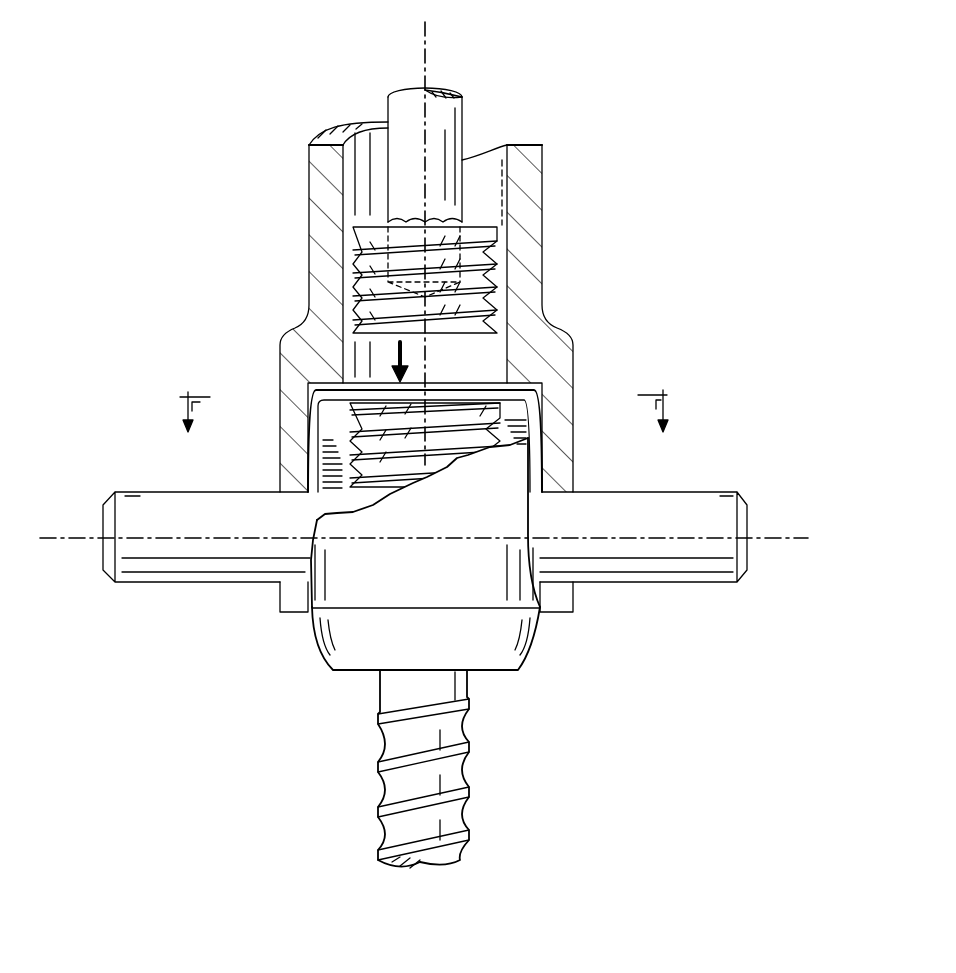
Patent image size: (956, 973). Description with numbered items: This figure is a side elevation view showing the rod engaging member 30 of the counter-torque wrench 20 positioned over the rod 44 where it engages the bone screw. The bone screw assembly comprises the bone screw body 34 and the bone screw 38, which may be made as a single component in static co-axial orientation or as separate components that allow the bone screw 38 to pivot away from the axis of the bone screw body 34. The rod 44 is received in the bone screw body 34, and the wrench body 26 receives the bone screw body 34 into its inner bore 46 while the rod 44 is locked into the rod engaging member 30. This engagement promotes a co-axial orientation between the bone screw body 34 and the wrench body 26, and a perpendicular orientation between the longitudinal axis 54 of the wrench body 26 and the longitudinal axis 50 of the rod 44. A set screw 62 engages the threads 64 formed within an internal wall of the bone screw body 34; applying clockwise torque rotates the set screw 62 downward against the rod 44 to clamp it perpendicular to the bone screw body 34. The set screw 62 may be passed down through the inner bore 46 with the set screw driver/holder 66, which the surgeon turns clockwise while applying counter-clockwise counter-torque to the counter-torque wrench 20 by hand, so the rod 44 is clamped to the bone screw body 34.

The counter-torque wrench 20 is at (266, 229).
The wrench body 26 is at (545, 162).
The rod engaging member 30 is at (278, 380).
The bone screw body 34 is at (540, 632).
The bone screw 38 is at (390, 815).
The rod 44 is at (232, 585).
The inner bore 46 is at (530, 468).
The longitudinal axis of the rod 50 is at (780, 538).
The longitudinal axis of the wrench body 54 is at (428, 36).
The set screw 62 is at (482, 226).
The threads 64 is at (452, 422).
The set screw driver/holder 66 is at (386, 110).